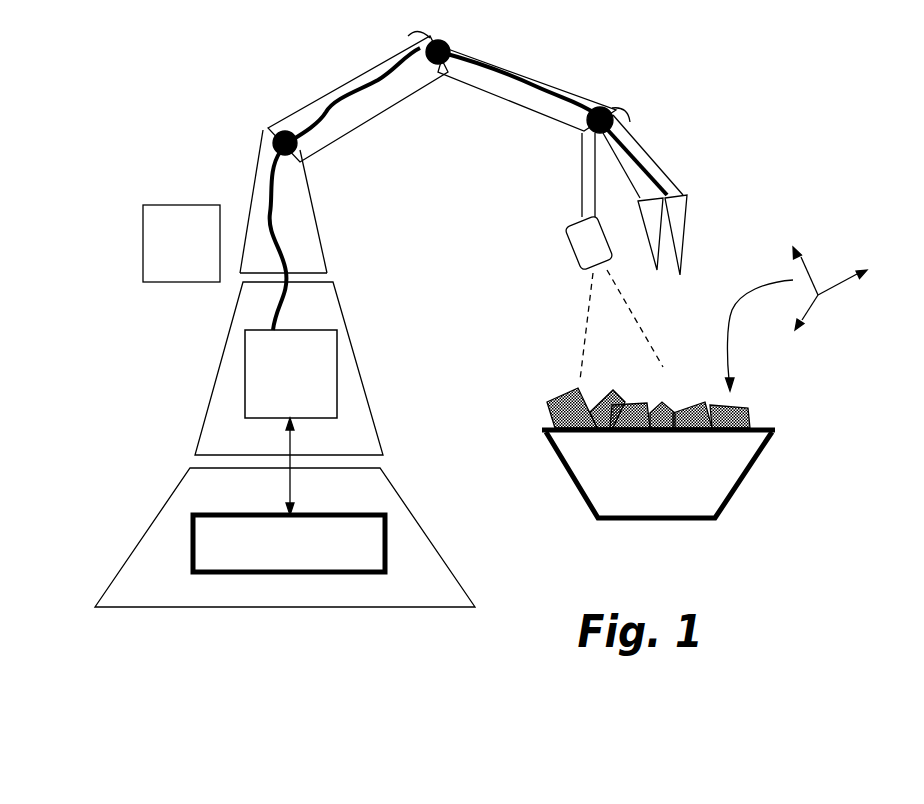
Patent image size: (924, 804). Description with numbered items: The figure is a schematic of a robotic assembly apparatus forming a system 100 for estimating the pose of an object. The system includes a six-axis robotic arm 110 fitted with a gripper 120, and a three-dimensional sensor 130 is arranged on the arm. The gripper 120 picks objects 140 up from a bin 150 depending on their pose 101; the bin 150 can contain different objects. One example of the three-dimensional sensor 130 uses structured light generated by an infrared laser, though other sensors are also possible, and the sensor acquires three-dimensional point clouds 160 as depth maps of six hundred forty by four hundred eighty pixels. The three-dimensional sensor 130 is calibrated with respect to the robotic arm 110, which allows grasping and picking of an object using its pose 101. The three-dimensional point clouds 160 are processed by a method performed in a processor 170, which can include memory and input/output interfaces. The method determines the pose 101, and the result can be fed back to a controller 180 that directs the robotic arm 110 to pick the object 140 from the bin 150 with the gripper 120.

The system 100 is at (598, 717).
The pose 101 is at (818, 243).
The 6-axis robotic arm 110 is at (358, 68).
The gripper 120 is at (685, 196).
The 3D sensor 130 is at (567, 223).
The objects 140 is at (622, 396).
The bin 150 is at (768, 430).
The 3D point clouds 160 is at (268, 207).
The processor 170 is at (193, 515).
The controller 180 is at (243, 387).